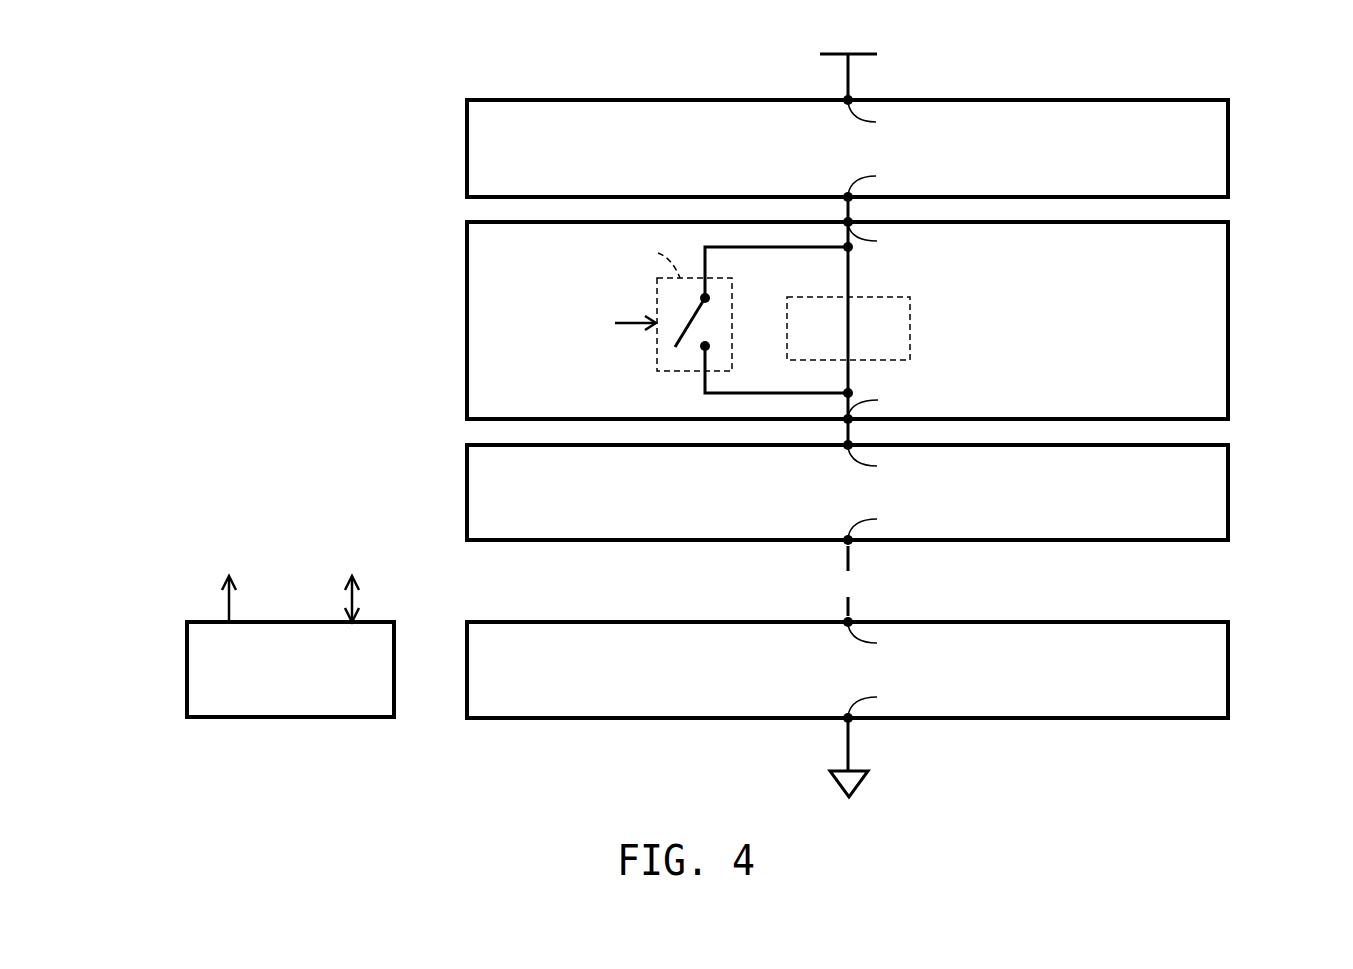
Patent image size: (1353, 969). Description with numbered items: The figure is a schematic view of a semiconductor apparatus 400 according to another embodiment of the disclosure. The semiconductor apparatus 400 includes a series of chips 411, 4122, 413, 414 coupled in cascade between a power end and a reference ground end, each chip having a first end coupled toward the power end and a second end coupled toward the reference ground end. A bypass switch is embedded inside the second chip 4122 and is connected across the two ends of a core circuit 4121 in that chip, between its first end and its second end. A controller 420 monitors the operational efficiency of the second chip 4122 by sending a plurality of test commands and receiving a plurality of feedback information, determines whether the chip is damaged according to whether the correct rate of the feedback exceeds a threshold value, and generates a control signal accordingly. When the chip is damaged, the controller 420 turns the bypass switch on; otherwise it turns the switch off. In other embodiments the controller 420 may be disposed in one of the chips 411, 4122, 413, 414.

The semiconductor apparatus 400 is at (752, 432).
The chip 411 is at (1229, 147).
The chip 4122 is at (892, 320).
The core circuit 4121 is at (910, 323).
The chip 413 is at (1229, 490).
The chip 414 is at (1229, 668).
The controller 420 is at (289, 718).